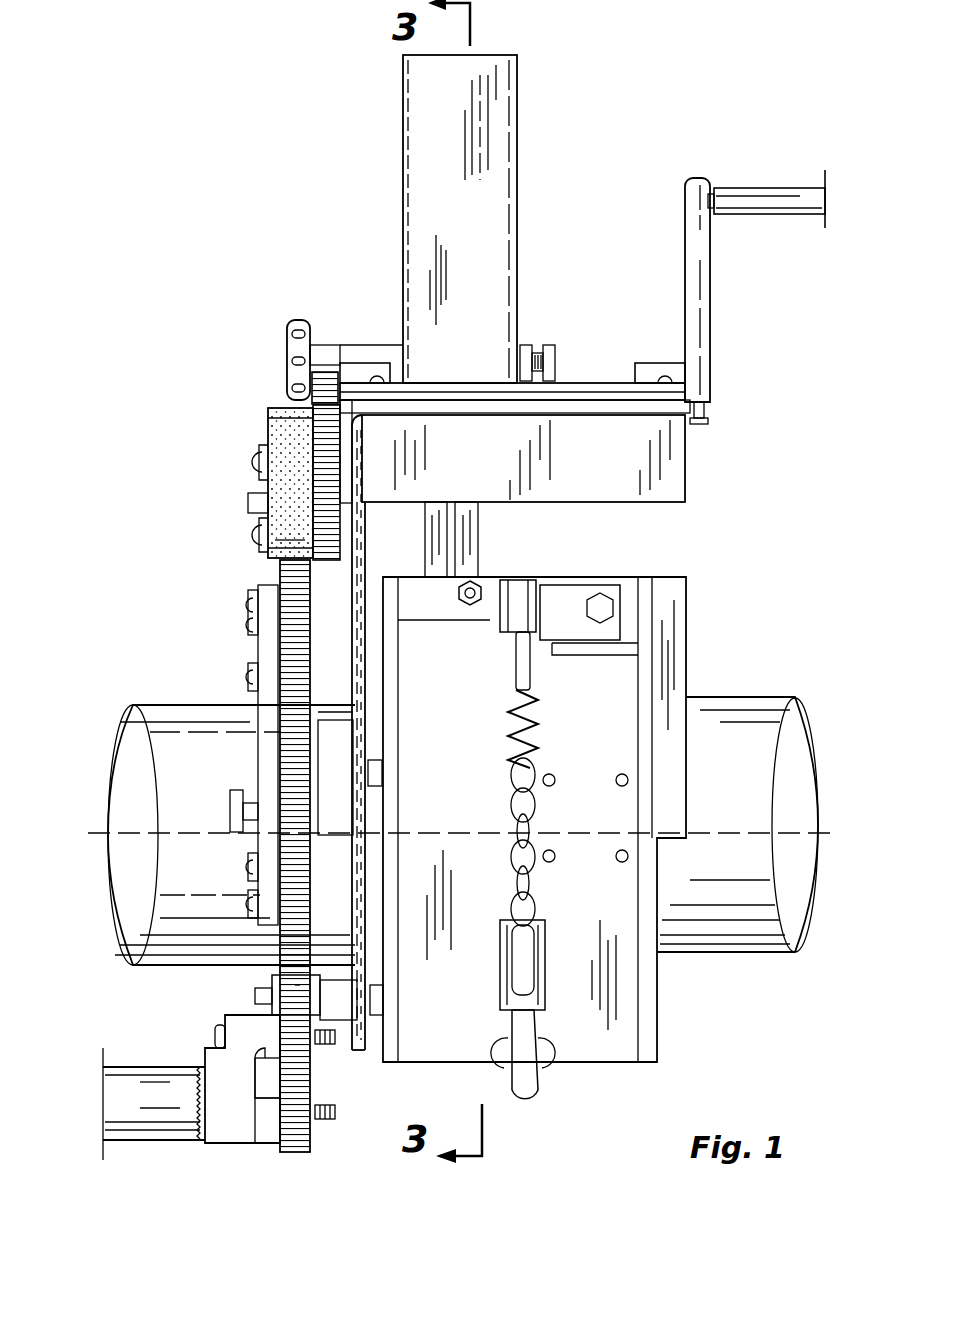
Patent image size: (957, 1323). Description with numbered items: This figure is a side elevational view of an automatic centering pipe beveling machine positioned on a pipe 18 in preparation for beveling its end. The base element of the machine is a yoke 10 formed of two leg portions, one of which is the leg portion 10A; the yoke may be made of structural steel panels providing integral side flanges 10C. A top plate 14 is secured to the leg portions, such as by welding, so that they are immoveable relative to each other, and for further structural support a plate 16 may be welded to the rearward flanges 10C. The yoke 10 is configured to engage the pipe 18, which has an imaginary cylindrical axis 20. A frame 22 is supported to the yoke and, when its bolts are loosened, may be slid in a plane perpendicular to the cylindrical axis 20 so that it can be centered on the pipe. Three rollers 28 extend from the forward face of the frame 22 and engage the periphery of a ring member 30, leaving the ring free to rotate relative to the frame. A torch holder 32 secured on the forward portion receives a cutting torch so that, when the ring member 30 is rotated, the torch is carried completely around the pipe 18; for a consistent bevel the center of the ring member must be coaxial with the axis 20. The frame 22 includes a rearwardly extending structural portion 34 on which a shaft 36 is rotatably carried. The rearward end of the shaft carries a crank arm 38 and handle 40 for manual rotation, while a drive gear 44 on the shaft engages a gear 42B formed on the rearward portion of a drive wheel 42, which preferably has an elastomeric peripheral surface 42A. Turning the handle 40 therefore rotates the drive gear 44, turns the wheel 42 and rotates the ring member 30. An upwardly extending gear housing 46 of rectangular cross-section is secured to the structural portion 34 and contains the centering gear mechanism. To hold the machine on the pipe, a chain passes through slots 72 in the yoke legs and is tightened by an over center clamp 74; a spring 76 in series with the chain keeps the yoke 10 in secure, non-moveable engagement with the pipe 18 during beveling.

The yoke 10 is at (708, 566).
The leg portion 10A is at (622, 705).
The side flanges 10C is at (393, 712).
The top plate 14 is at (490, 583).
The plate 16 is at (672, 630).
The pipe 18 is at (765, 708).
The cylindrical axis 20 is at (822, 828).
The frame 22 is at (355, 577).
The rollers 28 is at (278, 985).
The ring member 30 is at (282, 748).
The torch holder 32 is at (210, 1172).
The structural portion 34 is at (672, 472).
The shaft 36 is at (594, 392).
The crank arm 38 is at (702, 270).
The handle 40 is at (767, 192).
The drive wheel 42 is at (268, 476).
The elastomeric peripheral surface 42A is at (286, 515).
The gear 42B is at (322, 440).
The drive gear 44 is at (322, 386).
The gear housing 46 is at (497, 190).
The slots 72 is at (532, 697).
The over center clamp 74 is at (490, 1008).
The spring 76 is at (510, 728).